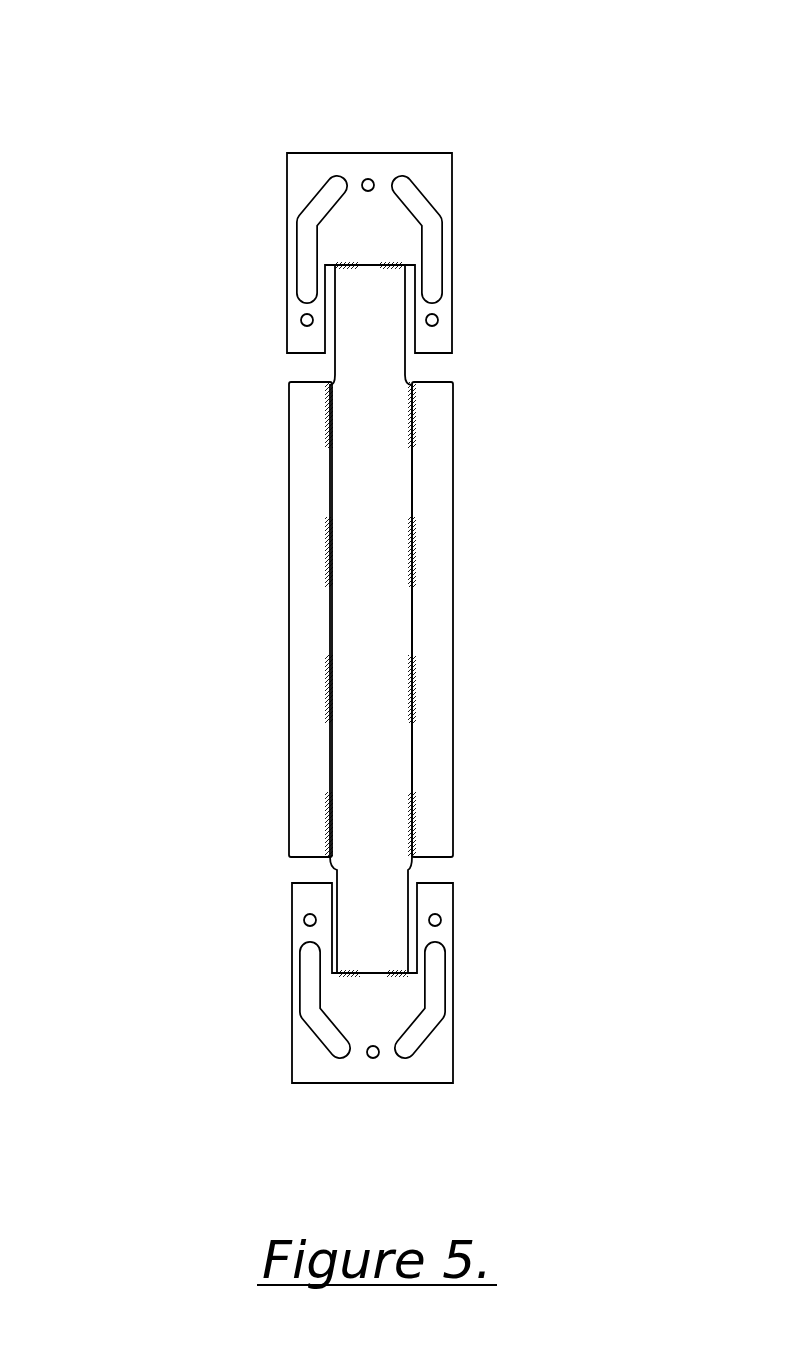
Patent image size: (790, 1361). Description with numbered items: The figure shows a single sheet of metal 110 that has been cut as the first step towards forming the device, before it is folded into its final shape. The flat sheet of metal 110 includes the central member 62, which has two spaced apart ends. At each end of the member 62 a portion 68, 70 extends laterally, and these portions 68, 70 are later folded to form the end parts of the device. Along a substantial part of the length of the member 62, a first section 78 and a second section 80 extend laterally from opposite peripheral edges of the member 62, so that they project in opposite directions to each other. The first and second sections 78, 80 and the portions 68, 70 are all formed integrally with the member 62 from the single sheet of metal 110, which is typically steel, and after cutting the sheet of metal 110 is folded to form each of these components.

The single sheet of metal 110 is at (550, 125).
The portion 68 is at (440, 237).
The portion 70 is at (445, 1043).
The member 62 is at (380, 417).
The first section 78 is at (440, 587).
The second section 80 is at (300, 582).